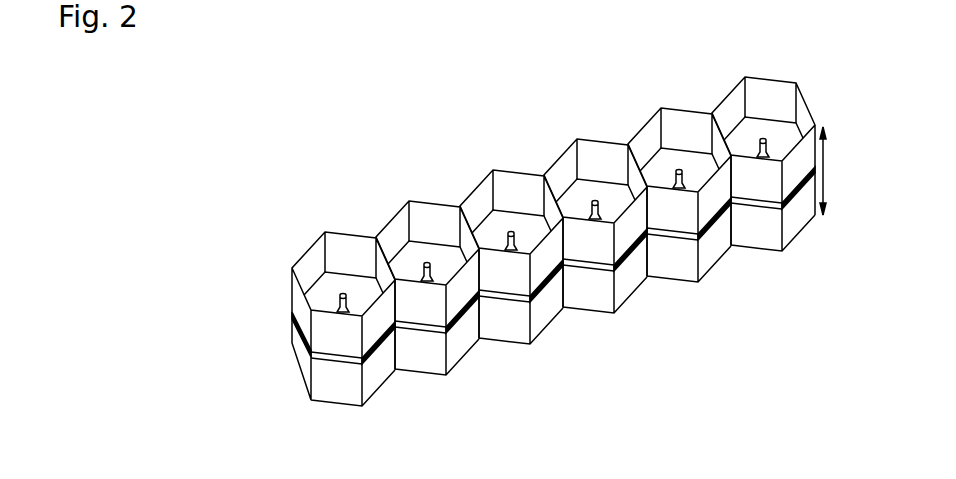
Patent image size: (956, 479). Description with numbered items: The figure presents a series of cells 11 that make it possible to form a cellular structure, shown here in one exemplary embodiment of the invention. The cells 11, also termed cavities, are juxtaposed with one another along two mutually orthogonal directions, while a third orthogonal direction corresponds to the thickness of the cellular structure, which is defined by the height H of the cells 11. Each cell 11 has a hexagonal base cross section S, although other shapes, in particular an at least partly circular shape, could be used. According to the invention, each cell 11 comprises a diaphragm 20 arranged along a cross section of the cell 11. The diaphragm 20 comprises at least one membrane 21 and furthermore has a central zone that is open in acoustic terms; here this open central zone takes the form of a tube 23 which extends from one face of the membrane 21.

The cell 11 is at (627, 265).
The diaphragm 20 is at (488, 223).
The membrane 21 is at (520, 224).
The tube 23 is at (518, 244).
The hexagonal base cross section S is at (806, 108).
The height of the cells H is at (830, 171).